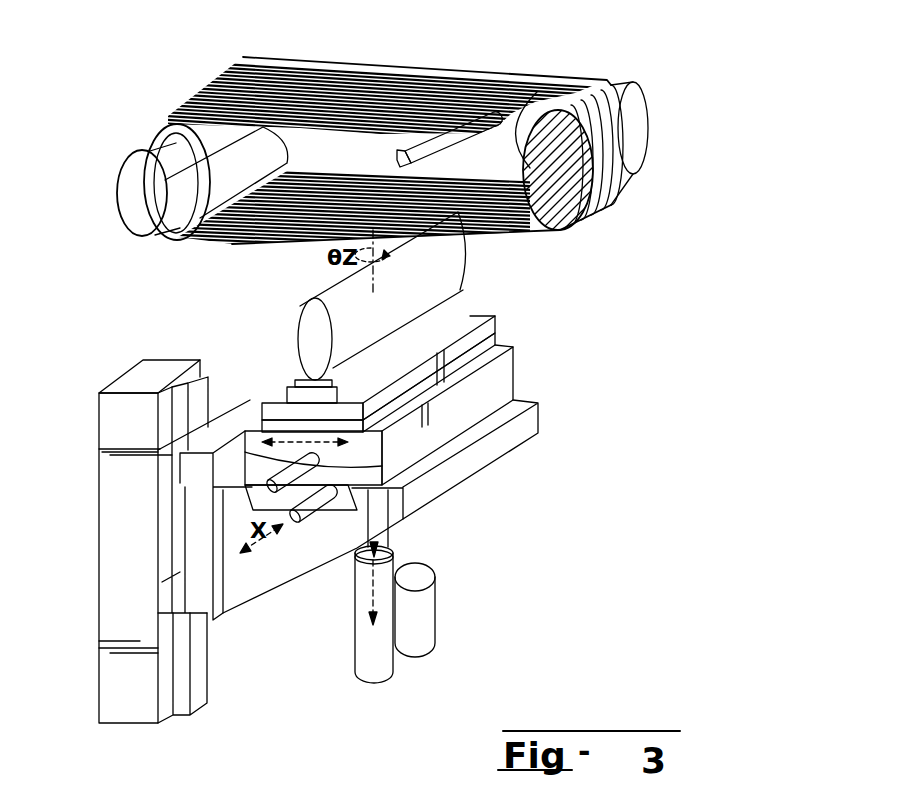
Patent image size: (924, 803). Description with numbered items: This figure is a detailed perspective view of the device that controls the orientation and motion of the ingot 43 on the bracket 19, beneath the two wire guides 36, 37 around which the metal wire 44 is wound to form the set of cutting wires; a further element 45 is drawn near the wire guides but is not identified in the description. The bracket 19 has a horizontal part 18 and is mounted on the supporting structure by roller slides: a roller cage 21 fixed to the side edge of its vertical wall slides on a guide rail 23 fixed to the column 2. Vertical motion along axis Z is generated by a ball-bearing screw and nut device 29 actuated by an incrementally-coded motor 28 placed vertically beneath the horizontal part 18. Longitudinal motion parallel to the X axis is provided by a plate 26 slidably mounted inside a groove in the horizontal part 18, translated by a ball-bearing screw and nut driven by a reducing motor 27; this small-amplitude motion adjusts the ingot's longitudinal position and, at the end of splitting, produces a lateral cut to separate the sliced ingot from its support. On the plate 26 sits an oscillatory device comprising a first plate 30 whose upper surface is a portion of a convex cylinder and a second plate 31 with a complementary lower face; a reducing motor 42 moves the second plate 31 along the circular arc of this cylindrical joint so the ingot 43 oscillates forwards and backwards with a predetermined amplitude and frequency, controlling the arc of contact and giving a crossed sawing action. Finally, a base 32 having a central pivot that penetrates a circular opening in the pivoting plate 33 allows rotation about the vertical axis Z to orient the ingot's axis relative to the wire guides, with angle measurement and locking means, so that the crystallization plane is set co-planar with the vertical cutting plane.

The column 2 is at (130, 670).
The horizontal part 18 is at (240, 500).
The bracket 19 is at (240, 580).
The roller cage 21 is at (168, 595).
The guide rail 23 is at (180, 687).
The plate 26 is at (350, 500).
The reducing motor 27 is at (317, 517).
The incrementally-coded motor 28 is at (427, 603).
The ball-bearing screw and nut device 29 is at (373, 677).
The first plate 30 is at (455, 422).
The second plate 31 is at (470, 385).
The base 32 is at (487, 340).
The pivoting plate 33 is at (478, 330).
The wire guide 36 is at (165, 170).
The wire guide 37 is at (537, 92).
The reducing motor 42 is at (265, 478).
The ingot 43 is at (450, 260).
The metal wire 44 is at (410, 67).
The roller 45 is at (482, 113).